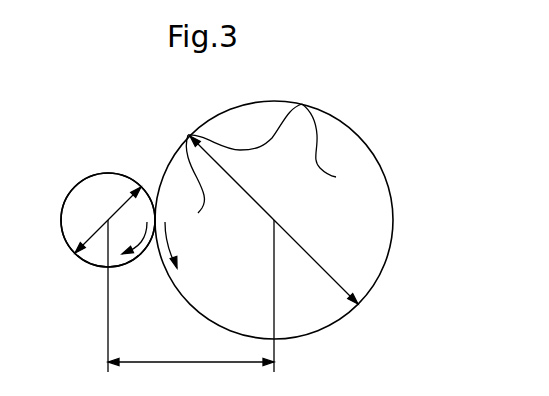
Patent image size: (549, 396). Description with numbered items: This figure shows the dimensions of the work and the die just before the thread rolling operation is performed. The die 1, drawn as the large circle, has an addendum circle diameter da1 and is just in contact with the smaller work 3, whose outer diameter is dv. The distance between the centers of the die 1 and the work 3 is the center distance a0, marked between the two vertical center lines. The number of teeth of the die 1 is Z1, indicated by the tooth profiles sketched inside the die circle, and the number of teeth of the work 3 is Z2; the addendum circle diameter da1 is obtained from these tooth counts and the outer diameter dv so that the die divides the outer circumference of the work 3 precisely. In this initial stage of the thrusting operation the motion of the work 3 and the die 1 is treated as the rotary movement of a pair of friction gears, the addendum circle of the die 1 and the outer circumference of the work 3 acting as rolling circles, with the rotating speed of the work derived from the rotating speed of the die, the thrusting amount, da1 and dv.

The die 1 is at (342, 315).
The work 3 is at (66, 243).
The number of teeth of the die Z1 is at (261, 143).
The number of teeth of the work Z2 is at (108, 204).
The outer diameter of the work dv is at (106, 220).
The addendum circle diameter of the die da1 is at (274, 220).
The center distance a0 is at (191, 296).